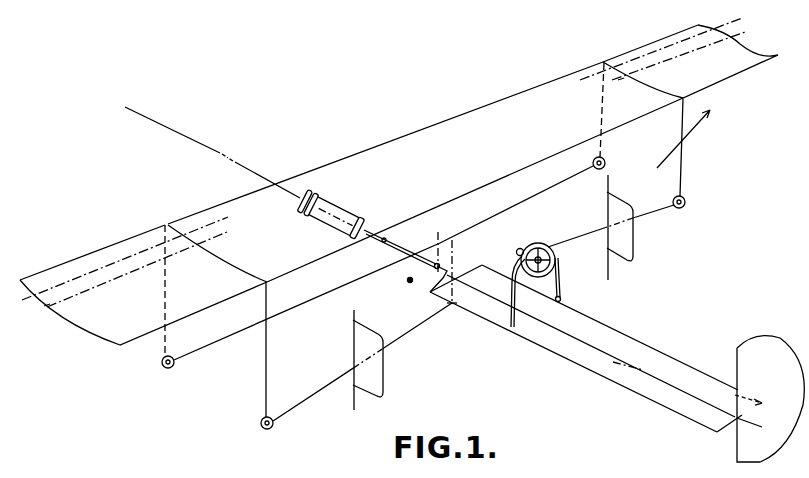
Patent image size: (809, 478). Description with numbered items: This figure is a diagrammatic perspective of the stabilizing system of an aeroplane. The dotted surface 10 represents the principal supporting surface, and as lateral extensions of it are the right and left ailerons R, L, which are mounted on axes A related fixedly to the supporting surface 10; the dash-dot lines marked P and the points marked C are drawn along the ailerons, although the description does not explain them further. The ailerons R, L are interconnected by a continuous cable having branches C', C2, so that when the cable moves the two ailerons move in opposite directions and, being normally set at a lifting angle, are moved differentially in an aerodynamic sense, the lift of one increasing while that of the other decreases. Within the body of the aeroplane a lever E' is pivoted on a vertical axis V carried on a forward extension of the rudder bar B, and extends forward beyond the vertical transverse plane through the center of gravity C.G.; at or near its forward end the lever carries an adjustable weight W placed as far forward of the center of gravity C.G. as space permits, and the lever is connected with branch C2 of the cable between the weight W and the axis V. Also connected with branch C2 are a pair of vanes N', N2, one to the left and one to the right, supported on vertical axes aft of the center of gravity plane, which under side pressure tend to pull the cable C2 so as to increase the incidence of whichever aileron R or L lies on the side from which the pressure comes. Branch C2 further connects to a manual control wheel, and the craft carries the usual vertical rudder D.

The principal supporting surface 10 is at (505, 99).
The aileron axis A is at (381, 159).
The pivot line of wing P is at (402, 165).
The chord reference point C is at (329, 197).
The left aileron L is at (143, 321).
The right aileron R is at (689, 110).
The adjustable weight W is at (335, 216).
The lever E' is at (399, 249).
The vertical axis V is at (438, 236).
The rudder bar B is at (482, 263).
The center of gravity C.G. is at (409, 283).
The cable branch C' is at (383, 269).
The cable branch C2 is at (313, 398).
The vane N' is at (381, 360).
The vane N2 is at (630, 245).
The vertical rudder D is at (770, 399).